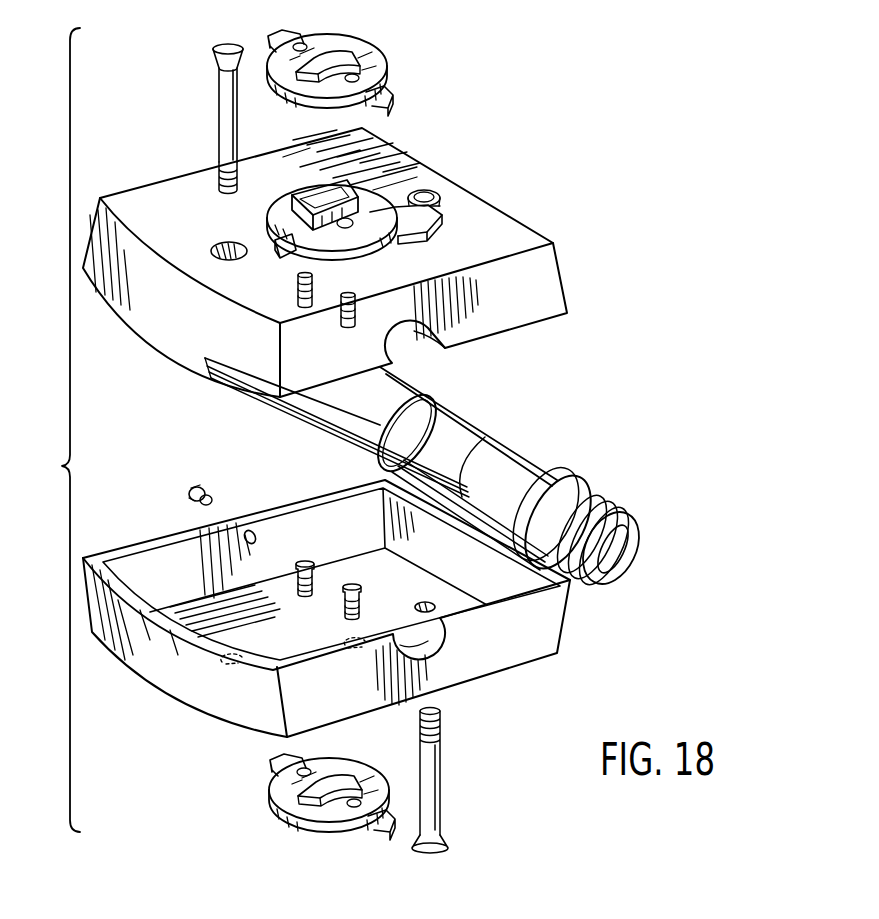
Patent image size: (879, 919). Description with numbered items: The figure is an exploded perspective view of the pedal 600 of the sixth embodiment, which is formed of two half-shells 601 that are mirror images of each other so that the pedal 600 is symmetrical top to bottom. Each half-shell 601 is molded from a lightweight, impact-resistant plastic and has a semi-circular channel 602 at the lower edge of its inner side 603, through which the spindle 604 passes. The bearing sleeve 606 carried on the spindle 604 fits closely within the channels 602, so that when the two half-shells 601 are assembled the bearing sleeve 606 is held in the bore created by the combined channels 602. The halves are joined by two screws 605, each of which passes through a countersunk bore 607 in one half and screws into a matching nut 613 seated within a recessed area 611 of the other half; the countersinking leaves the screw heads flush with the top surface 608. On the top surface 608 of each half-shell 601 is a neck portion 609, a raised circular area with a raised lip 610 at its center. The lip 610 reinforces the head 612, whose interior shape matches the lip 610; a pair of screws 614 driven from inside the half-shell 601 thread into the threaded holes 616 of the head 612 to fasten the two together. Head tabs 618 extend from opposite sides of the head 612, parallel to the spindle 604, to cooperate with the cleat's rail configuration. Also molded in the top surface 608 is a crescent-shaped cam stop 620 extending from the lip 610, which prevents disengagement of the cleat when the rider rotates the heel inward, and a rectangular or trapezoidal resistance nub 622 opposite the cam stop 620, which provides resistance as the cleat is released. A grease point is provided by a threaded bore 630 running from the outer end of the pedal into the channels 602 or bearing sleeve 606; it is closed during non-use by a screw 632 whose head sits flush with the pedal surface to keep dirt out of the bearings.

The pedal 600 is at (48, 430).
The half-shell 601 is at (553, 278).
The semi-circular channel 602 is at (412, 325).
The inner side 603 is at (530, 328).
The spindle 604 is at (473, 442).
The screw 605 is at (222, 93).
The bearing sleeve 606 is at (420, 380).
The bore 607 is at (218, 245).
The top surface 608 is at (507, 222).
The neck portion 609 is at (352, 235).
The lip 610 is at (310, 193).
The recessed area 611 is at (437, 202).
The head 612 is at (382, 53).
The nut 613 is at (428, 190).
The screw 614 is at (350, 322).
The threaded hole 616 is at (305, 42).
The head tab 618 is at (282, 32).
The cam stop 620 is at (427, 223).
The resistance nub 622 is at (283, 240).
The threaded bore 630 is at (251, 532).
The screw 632 is at (206, 492).